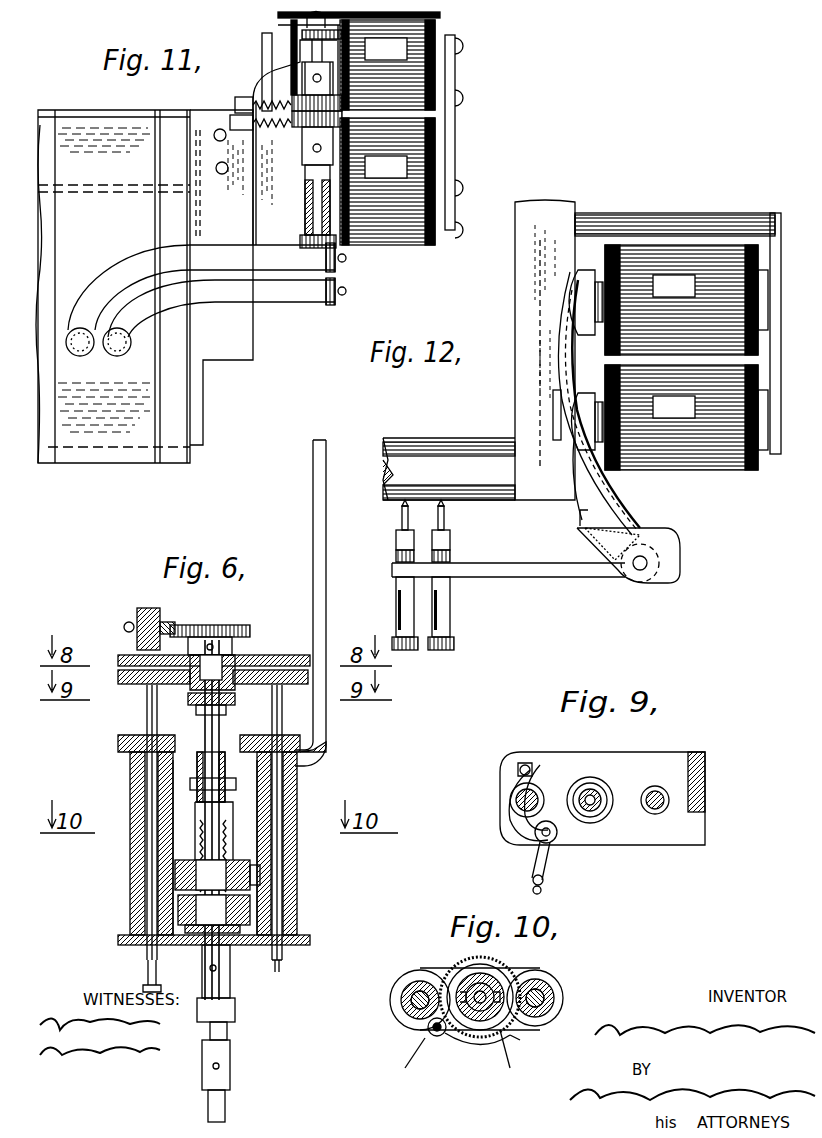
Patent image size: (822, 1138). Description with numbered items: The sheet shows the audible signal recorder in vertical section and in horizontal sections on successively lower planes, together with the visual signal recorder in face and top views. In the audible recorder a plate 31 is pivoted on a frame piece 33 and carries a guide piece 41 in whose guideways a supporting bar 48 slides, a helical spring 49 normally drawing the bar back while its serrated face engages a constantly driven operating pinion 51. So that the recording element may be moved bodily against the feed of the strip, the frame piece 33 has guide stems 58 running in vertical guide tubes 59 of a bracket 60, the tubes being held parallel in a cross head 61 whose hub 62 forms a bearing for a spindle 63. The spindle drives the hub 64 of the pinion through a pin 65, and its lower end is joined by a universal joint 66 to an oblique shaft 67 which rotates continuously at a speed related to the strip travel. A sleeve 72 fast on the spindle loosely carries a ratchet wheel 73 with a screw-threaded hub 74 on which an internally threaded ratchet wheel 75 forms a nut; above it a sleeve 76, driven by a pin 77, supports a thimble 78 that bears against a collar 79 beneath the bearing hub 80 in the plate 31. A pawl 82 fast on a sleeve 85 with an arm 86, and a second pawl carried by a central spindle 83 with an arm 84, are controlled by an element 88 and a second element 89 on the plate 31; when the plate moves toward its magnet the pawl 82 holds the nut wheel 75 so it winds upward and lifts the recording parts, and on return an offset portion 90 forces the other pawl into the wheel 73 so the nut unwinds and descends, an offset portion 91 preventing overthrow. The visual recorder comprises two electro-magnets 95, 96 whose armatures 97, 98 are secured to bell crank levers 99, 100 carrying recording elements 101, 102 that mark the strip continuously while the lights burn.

In FIG. 6, the plate 31 is at (292, 660).
In FIG. 6, the frame piece 33 is at (288, 685).
In FIG. 6, the guide piece 41 is at (146, 608).
In FIG. 6, the supporting bar 48 is at (175, 622).
In FIG. 6, the helical spring 49 is at (125, 625).
In FIG. 6, the operating pinion 51 is at (228, 625).
In FIG. 6, the guide stems 58 is at (147, 858).
In FIG. 9, the guide stems 58 is at (530, 790).
In FIG. 10, the guide stems 58 is at (532, 1008).
In FIG. 6, the guide tubes 59 is at (130, 780).
In FIG. 9, the guide tubes 59 is at (510, 800).
In FIG. 10, the guide tubes 59 is at (410, 1010).
In FIG. 6, the bracket 60 is at (326, 548).
In FIG. 9, the bracket 60 is at (705, 780).
In FIG. 6, the cross head 61 is at (310, 940).
In FIG. 6, the hub 62 is at (230, 950).
In FIG. 6, the spindle 63 is at (225, 790).
In FIG. 9, the spindle 63 is at (588, 811).
In FIG. 10, the spindle 63 is at (455, 985).
In FIG. 6, the hub of the pinion 64 is at (219, 715).
In FIG. 9, the hub of the pinion 64 is at (594, 806).
In FIG. 6, the pin 65 is at (196, 712).
In FIG. 6, the universal joint 66 is at (235, 1018).
In FIG. 6, the oblique shaft 67 is at (225, 1100).
In FIG. 6, the sleeve 72 is at (250, 905).
In FIG. 10, the sleeve 72 is at (490, 985).
In FIG. 6, the ratchet wheel 73 is at (240, 928).
In FIG. 6, the screw-threaded hub 74 is at (228, 835).
In FIG. 10, the screw-threaded hub 74 is at (470, 985).
In FIG. 6, the internally screw-threaded ratchet wheel 75 is at (260, 875).
In FIG. 10, the internally screw-threaded ratchet wheel 75 is at (515, 1038).
In FIG. 6, the sleeve 76 is at (250, 868).
In FIG. 10, the sleeve 76 is at (512, 993).
In FIG. 6, the pin 77 is at (190, 784).
In FIG. 6, the thimble 78 is at (165, 735).
In FIG. 6, the collar 79 is at (188, 699).
In FIG. 9, the collar 79 is at (590, 780).
In FIG. 6, the bearing hub 80 is at (235, 665).
In FIG. 10, the pawl 82 is at (455, 1042).
In FIG. 9, the central spindle 83 is at (535, 835).
In FIG. 10, the central spindle 83 is at (448, 1061).
In FIG. 9, the arm 84 is at (510, 815).
In FIG. 10, the sleeve 85 is at (437, 1036).
In FIG. 9, the arm 86 is at (548, 862).
In FIG. 9, the element 88 is at (533, 880).
In FIG. 9, the second element 89 is at (520, 770).
In FIG. 9, the offset portion 90 is at (526, 762).
In FIG. 9, the offset portion 91 is at (540, 893).
In FIG. 12, the electro-magnet 95 is at (686, 300).
In FIG. 11, the electro-magnet 96 is at (401, 132).
In FIG. 12, the electro-magnet 96 is at (686, 417).
In FIG. 12, the armature 97 is at (590, 305).
In FIG. 11, the armature 98 is at (262, 42).
In FIG. 12, the armature 98 is at (590, 420).
In FIG. 11, the bell crank lever 99 is at (240, 112).
In FIG. 12, the bell crank lever 99 is at (605, 490).
In FIG. 11, the bell crank lever 100 is at (258, 130).
In FIG. 12, the bell crank lever 100 is at (570, 485).
In FIG. 11, the recording element 101 is at (131, 342).
In FIG. 12, the recording element 101 is at (452, 600).
In FIG. 11, the recording element 102 is at (82, 356).
In FIG. 12, the recording element 102 is at (398, 588).